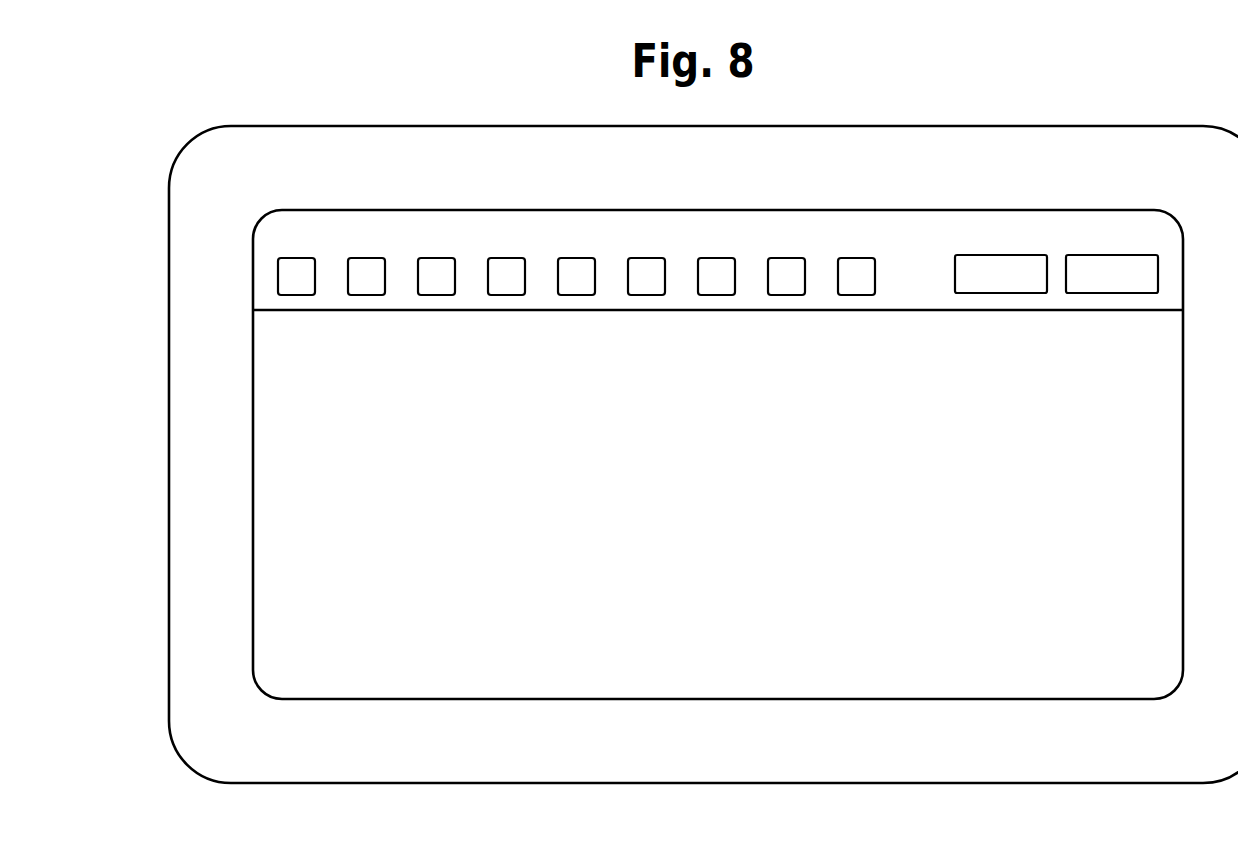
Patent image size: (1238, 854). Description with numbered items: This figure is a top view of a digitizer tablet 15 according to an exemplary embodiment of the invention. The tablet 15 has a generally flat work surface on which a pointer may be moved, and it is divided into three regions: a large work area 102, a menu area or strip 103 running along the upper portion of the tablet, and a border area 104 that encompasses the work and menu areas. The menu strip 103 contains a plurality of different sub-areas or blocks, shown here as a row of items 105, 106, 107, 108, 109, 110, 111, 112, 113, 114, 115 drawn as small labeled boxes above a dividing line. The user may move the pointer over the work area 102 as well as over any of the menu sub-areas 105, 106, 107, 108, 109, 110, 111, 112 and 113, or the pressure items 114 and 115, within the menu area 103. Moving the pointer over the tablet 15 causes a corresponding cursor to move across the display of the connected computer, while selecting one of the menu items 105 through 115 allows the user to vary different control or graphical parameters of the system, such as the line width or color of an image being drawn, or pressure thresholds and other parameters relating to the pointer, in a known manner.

The digitizer tablet 15 is at (373, 99).
The work area 102 is at (313, 520).
The menu area or strip 103 is at (268, 249).
The border area 104 is at (210, 413).
The menu sub-area or block 105 is at (298, 295).
The menu sub-area or block 106 is at (368, 295).
The menu sub-area or block 107 is at (438, 295).
The menu sub-area or block 108 is at (508, 295).
The menu sub-area or block 109 is at (578, 295).
The menu sub-area or block 110 is at (648, 295).
The menu sub-area or block 111 is at (718, 295).
The menu sub-area or block 112 is at (788, 295).
The menu sub-area or block 113 is at (858, 295).
The menu sub-area or block 114 is at (1001, 293).
The menu sub-area or block 115 is at (1113, 293).